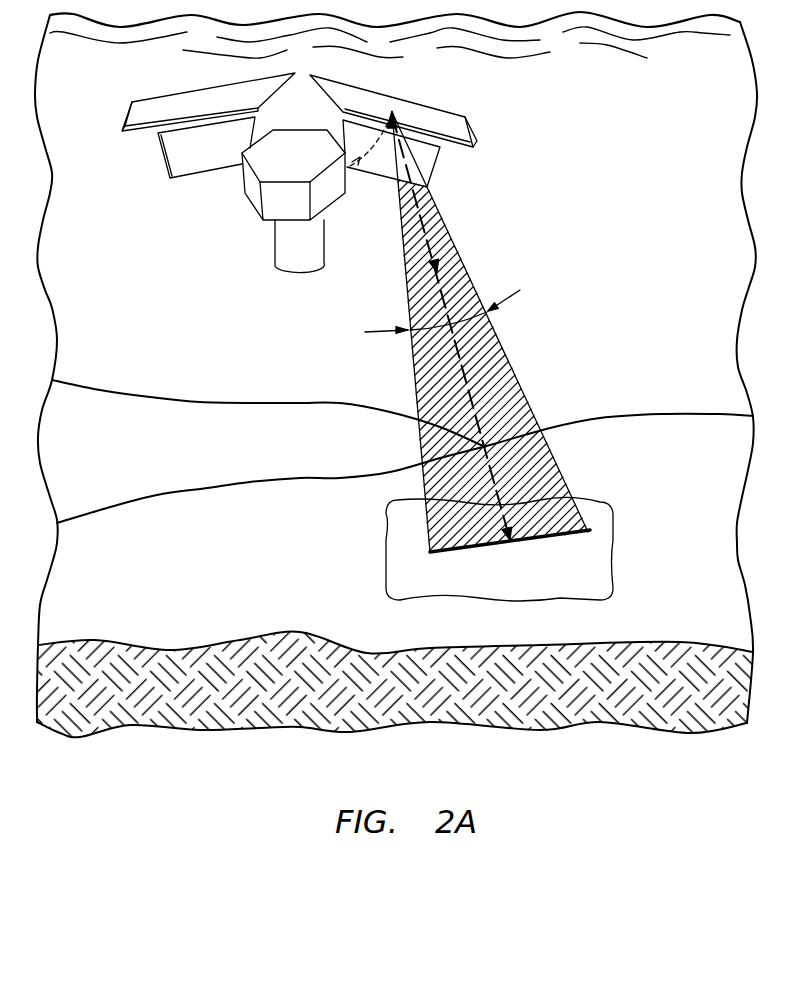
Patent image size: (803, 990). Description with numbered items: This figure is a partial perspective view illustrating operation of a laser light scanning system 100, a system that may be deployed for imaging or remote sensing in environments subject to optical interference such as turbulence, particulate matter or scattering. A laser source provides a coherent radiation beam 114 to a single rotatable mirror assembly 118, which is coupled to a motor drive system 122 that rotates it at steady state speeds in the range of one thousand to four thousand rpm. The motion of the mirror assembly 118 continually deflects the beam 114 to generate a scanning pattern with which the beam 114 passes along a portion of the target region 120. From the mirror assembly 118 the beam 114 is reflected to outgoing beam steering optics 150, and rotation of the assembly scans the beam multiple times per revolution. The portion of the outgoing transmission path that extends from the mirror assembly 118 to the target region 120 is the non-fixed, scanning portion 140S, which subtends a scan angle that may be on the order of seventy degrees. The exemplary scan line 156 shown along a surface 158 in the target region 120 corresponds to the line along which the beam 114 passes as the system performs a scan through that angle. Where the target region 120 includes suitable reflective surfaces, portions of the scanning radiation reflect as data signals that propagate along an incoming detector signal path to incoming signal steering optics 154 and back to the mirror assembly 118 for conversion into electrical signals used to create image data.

The laser light scanning system 100 is at (348, 168).
The coherent radiation beam 114 is at (463, 373).
The rotatable mirror assembly 118 is at (252, 208).
The target region 120 is at (679, 496).
The motor drive system 122 is at (275, 248).
The scanning portion of the transmission path 140S is at (513, 357).
The outgoing beam steering optics 150 is at (388, 93).
The incoming signal steering optics 154 is at (210, 87).
The scan line 156 is at (527, 542).
The surface 158 is at (570, 547).